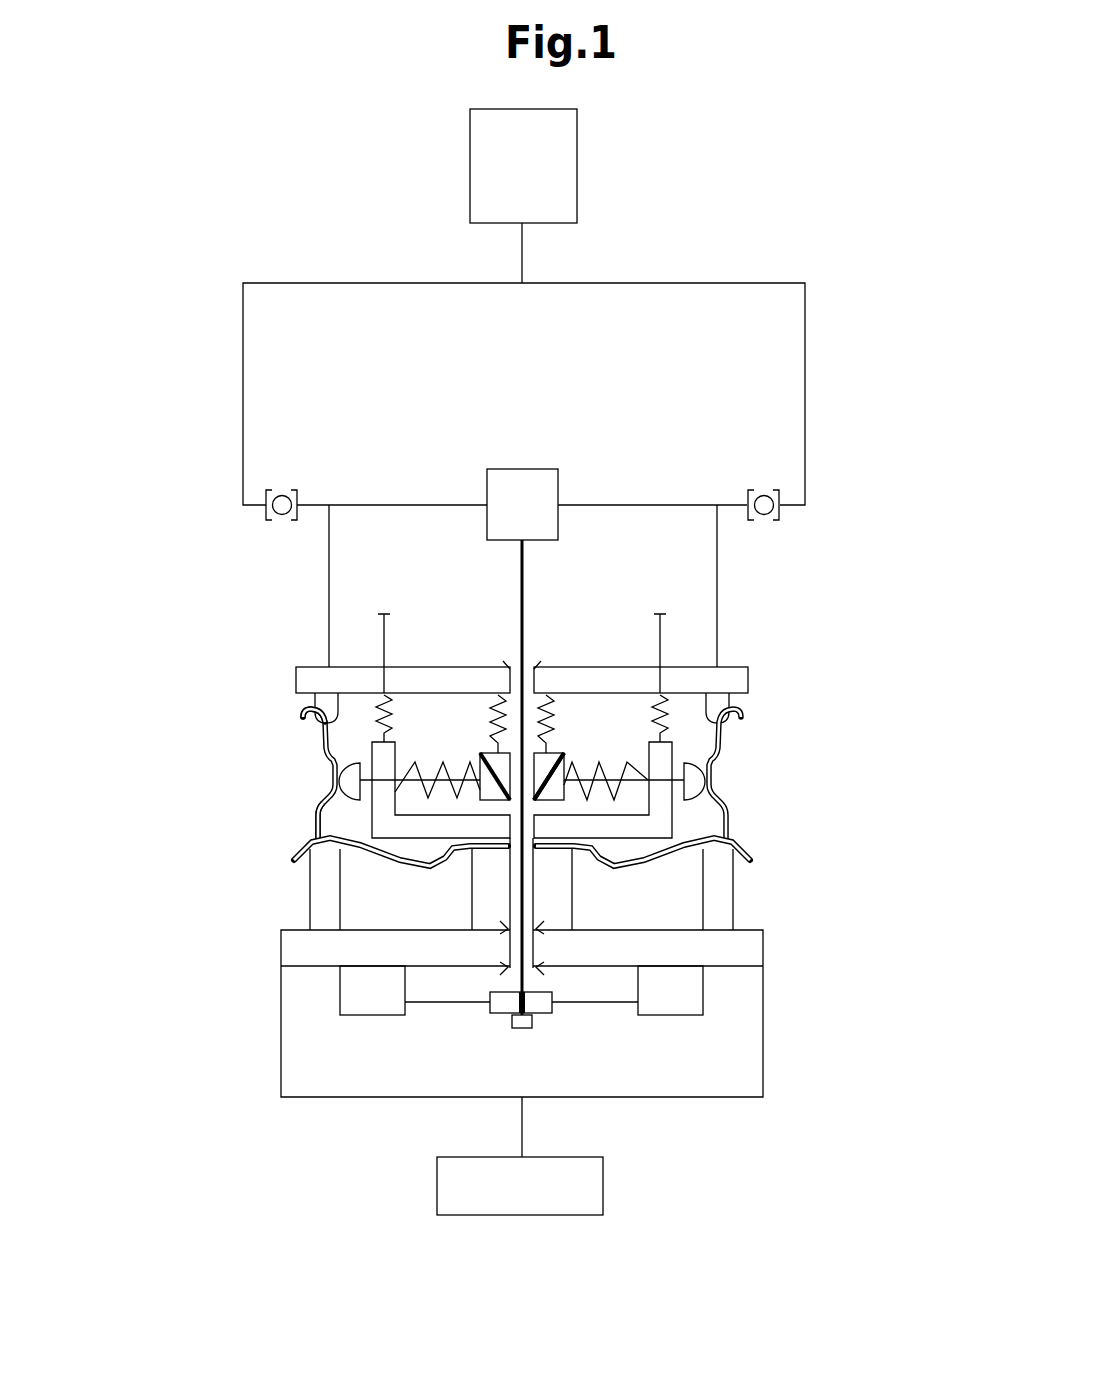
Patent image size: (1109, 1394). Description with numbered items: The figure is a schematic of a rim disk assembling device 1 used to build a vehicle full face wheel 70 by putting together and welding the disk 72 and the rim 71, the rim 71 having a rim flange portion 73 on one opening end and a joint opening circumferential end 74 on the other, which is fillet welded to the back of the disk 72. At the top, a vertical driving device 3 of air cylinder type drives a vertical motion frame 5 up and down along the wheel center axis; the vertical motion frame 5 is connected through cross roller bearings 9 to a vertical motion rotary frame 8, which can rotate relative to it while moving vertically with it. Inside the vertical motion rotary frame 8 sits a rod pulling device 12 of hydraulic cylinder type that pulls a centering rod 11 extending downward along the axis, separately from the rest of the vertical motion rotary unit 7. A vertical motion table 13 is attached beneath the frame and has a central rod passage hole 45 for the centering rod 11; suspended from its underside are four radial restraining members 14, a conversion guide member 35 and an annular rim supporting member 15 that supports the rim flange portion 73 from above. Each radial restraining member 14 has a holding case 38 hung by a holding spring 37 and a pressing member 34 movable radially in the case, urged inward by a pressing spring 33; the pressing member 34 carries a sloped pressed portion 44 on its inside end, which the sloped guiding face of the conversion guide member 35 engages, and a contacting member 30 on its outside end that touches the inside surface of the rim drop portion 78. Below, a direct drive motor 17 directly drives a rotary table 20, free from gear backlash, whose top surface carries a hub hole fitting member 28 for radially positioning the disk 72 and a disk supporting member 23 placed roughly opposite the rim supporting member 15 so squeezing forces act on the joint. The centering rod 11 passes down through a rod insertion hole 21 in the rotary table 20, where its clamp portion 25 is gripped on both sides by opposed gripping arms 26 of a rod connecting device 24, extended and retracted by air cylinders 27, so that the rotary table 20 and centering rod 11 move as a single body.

The rim disk assembling device 1 is at (730, 187).
The vertical driving device 3 is at (498, 184).
The vertical motion frame 5 is at (805, 343).
The vertical motion rotary unit 7 is at (732, 597).
The vertical motion rotary frame 8 is at (378, 505).
The cross roller bearings 9 is at (277, 502).
The centering rod 11 is at (523, 587).
The rod pulling device 12 is at (503, 528).
The vertical motion table 13 is at (308, 678).
The radial restraining member 14 is at (437, 720).
The rim supporting member 15 is at (323, 708).
The direct drive motor 17 is at (503, 1205).
The rotary table 20 is at (727, 953).
The rod insertion hole 21 is at (517, 948).
The disk supporting member 23 is at (325, 853).
The rod connecting device 24 is at (422, 1017).
The clamp portion 25 is at (532, 1027).
The gripping arms 26 is at (547, 1005).
The air cylinders 27 is at (670, 1007).
The hub hole fitting member 28 is at (507, 843).
The contacting member 30 is at (695, 788).
The pressing spring 33 is at (633, 775).
The pressing member 34 is at (585, 772).
The conversion guide member 35 is at (543, 762).
The holding spring 37 is at (667, 708).
The holding case 38 is at (663, 813).
The pressed portion 44 is at (563, 797).
The rod passage hole 45 is at (518, 672).
The vehicle full face wheel 70 is at (317, 813).
The rim 71 is at (727, 807).
The disk 72 is at (747, 853).
The rim flange portion 73 is at (305, 715).
The joint opening circumferential end 74 is at (320, 822).
The rim drop portion 78 is at (330, 782).